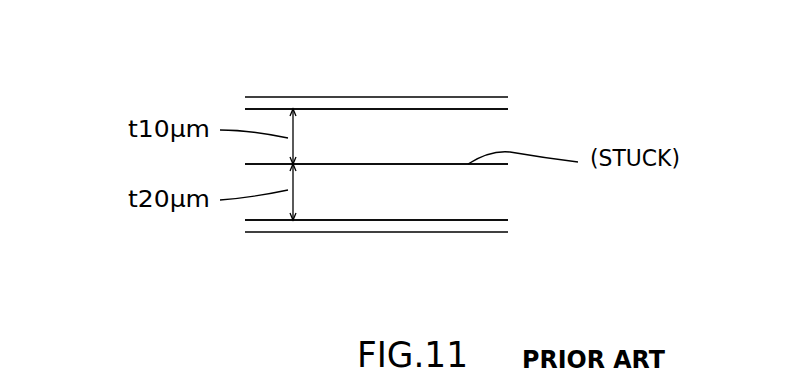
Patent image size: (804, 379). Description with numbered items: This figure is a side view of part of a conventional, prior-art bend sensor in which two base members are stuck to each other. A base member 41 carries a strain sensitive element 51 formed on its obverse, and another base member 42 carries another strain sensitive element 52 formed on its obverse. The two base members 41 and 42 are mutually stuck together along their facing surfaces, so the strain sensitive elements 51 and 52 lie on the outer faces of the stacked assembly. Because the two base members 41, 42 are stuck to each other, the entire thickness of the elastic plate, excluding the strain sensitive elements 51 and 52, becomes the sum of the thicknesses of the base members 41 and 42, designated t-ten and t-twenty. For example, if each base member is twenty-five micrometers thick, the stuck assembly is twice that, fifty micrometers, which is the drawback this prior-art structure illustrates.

The strain sensitive element 51 is at (347, 100).
The base member 41 is at (475, 125).
The base member 42 is at (475, 202).
The strain sensitive element 52 is at (353, 233).